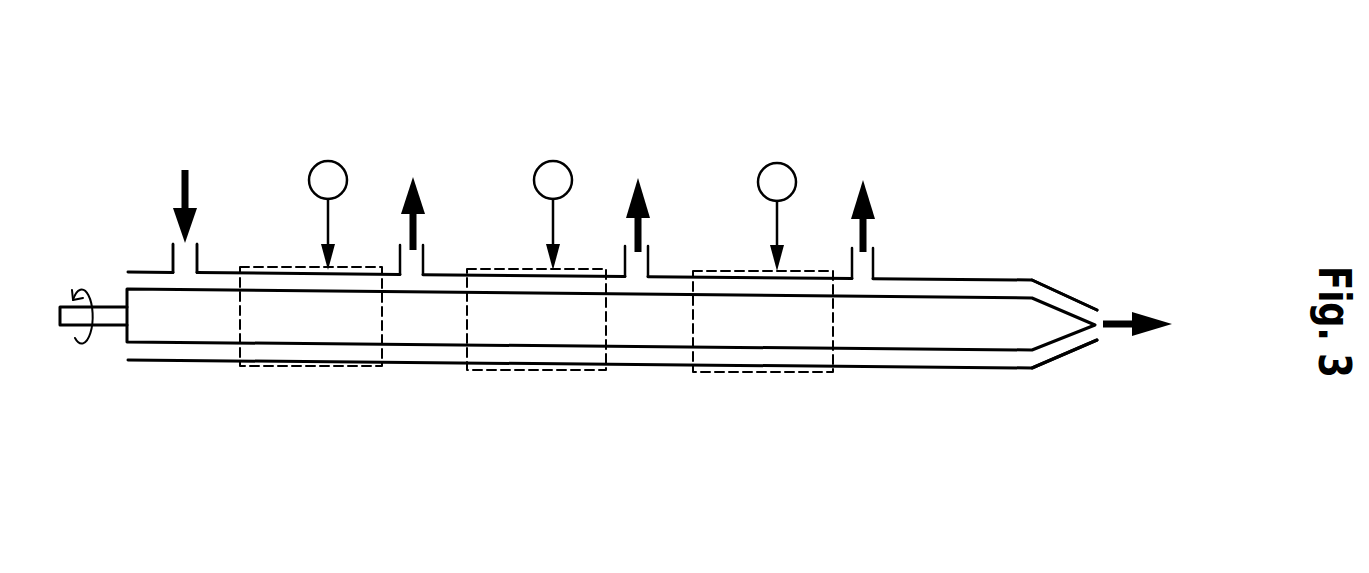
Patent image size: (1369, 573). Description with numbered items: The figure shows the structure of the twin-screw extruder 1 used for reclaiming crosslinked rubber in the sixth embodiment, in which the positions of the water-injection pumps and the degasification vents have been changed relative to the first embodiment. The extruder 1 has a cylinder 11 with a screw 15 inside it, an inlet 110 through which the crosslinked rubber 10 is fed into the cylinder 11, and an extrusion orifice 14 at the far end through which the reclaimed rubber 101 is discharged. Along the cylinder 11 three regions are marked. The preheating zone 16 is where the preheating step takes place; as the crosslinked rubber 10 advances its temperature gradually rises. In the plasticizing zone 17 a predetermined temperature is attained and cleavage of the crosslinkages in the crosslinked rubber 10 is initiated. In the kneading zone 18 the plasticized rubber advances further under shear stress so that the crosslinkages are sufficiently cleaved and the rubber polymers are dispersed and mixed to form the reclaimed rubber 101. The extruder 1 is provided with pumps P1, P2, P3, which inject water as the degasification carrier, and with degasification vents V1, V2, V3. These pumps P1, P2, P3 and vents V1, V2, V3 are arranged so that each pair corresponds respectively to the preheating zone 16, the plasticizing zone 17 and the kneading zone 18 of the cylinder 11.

The twin-screw extruder 1 is at (500, 118).
The crosslinked rubber 10 is at (190, 183).
The inlet 110 is at (199, 258).
The cylinder 11 is at (197, 362).
The extrusion orifice 14 is at (1108, 327).
The screw 15 is at (156, 327).
The preheating zone 16 is at (305, 368).
The plasticizing zone 17 is at (532, 372).
The kneading zone 18 is at (758, 373).
The reclaimed rubber 101 is at (1121, 318).
The pump P1 is at (330, 161).
The pump P2 is at (553, 161).
The pump P3 is at (778, 163).
The degasification vent V1 is at (427, 253).
The degasification vent V2 is at (650, 253).
The degasification vent V3 is at (874, 253).